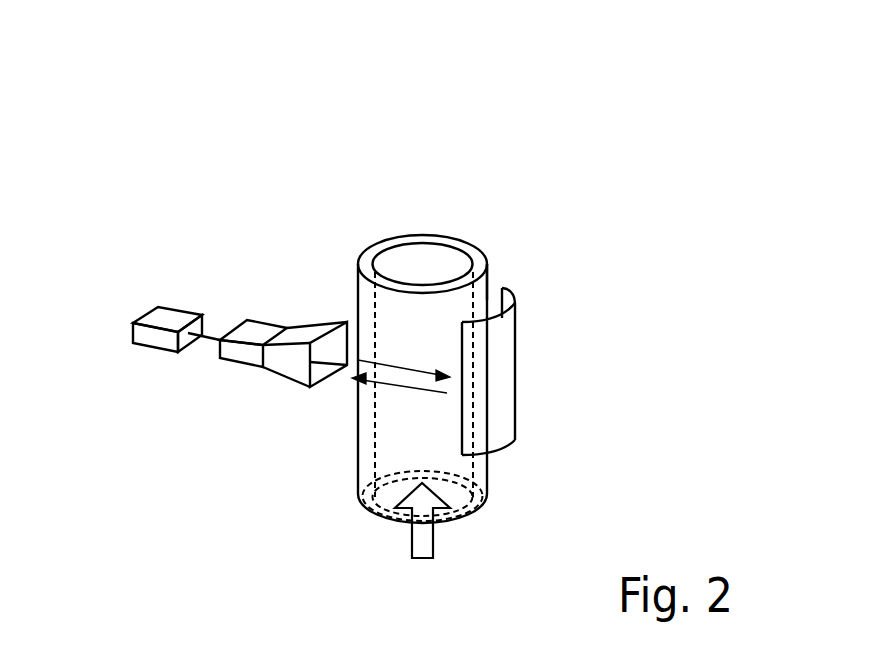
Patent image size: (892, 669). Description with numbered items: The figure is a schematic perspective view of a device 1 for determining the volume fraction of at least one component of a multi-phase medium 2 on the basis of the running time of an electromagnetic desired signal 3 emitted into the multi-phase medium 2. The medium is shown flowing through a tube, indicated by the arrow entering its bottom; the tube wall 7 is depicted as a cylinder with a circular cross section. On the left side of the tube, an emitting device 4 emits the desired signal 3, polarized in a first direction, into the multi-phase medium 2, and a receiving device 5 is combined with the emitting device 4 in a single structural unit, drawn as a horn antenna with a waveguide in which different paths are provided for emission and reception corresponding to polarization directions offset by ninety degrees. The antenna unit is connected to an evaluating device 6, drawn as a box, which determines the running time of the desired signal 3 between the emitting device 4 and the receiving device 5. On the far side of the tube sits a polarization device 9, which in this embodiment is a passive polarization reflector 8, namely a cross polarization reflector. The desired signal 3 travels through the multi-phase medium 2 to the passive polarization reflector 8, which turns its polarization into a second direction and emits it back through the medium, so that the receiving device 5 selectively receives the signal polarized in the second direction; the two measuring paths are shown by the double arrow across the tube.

The device 1 is at (354, 150).
The multi-phase medium 2 is at (383, 502).
The desired signal 3 is at (390, 360).
The emitting device 4 is at (251, 414).
The receiving device 5 is at (245, 367).
The evaluating device 6 is at (158, 355).
The tube wall 7 is at (477, 255).
The passive polarization reflector 8 is at (507, 378).
The polarization device 9 is at (232, 268).